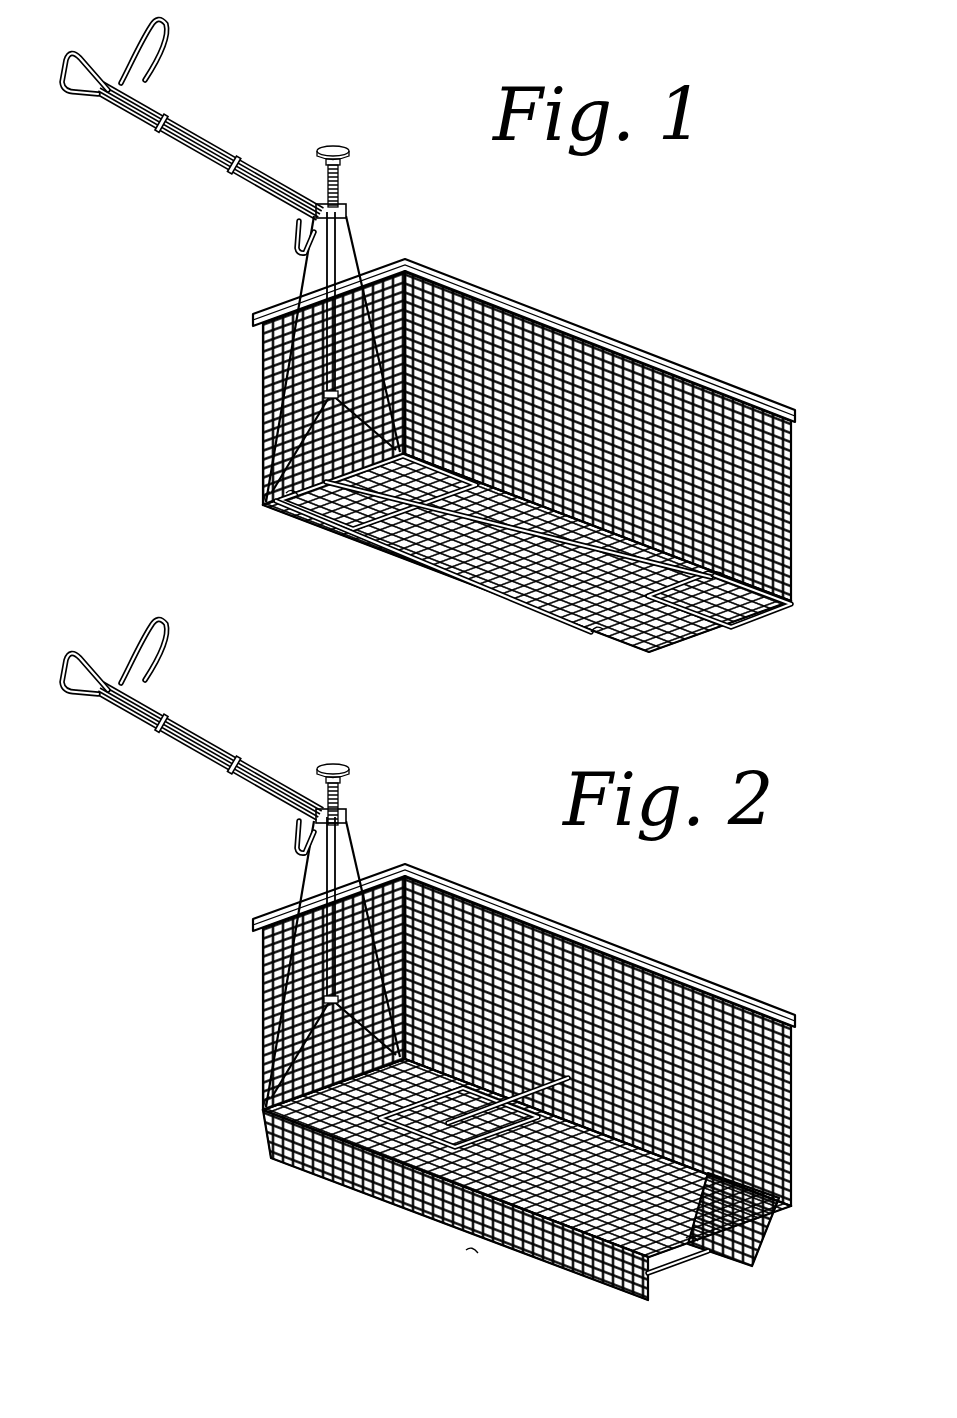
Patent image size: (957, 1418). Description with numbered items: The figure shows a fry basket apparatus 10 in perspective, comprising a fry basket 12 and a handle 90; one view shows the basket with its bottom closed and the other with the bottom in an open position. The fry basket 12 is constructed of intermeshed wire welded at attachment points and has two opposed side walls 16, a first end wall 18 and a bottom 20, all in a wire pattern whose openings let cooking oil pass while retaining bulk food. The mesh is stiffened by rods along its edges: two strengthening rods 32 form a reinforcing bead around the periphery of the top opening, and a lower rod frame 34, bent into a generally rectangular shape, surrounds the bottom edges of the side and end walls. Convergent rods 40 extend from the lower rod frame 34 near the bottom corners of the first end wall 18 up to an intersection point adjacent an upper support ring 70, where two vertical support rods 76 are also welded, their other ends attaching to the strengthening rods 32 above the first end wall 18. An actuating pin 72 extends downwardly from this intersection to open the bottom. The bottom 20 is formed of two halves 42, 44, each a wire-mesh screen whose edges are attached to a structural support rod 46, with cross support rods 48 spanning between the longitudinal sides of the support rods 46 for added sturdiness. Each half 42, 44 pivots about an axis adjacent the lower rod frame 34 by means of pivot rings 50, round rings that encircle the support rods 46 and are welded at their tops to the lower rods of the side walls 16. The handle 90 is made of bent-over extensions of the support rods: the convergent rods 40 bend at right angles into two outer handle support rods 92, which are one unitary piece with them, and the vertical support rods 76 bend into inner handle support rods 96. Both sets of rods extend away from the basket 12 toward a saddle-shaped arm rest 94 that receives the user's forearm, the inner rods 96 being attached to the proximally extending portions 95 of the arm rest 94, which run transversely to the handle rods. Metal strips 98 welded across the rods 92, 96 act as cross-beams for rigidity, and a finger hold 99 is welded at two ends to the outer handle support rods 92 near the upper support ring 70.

In FIG. 1, the fry basket apparatus 10 is at (505, 467).
In FIG. 2, the fry basket apparatus 10 is at (505, 1071).
In FIG. 1, the fry basket 12 is at (782, 456).
In FIG. 2, the fry basket 12 is at (626, 1041).
In FIG. 1, the side walls 16 is at (690, 372).
In FIG. 2, the side walls 16 is at (524, 945).
In FIG. 1, the first end wall 18 is at (252, 346).
In FIG. 2, the first end wall 18 is at (291, 993).
In FIG. 1, the bottom 20 is at (398, 555).
In FIG. 2, the bottom 20 is at (527, 1158).
In FIG. 1, the strengthening rods 32 is at (473, 284).
In FIG. 2, the strengthening rods 32 is at (478, 941).
In FIG. 1, the lower rod frame 34 is at (262, 490).
In FIG. 2, the lower rod frame 34 is at (365, 1107).
In FIG. 1, the convergent rods 40 is at (335, 341).
In FIG. 2, the convergent rods 40 is at (336, 943).
In FIG. 2, the bottom half 42 is at (455, 1205).
In FIG. 2, the bottom half 44 is at (768, 1222).
In FIG. 1, the structural support rod 46 is at (262, 495).
In FIG. 2, the structural support rod 46 is at (234, 1154).
In FIG. 1, the cross support rods 48 is at (300, 512).
In FIG. 2, the cross support rods 48 is at (582, 1277).
In FIG. 1, the pivot rings 50 is at (582, 622).
In FIG. 2, the pivot rings 50 is at (708, 1068).
In FIG. 1, the upper support ring 70 is at (380, 176).
In FIG. 2, the upper support ring 70 is at (380, 776).
In FIG. 1, the actuating pin 72 is at (332, 228).
In FIG. 2, the actuating pin 72 is at (385, 792).
In FIG. 1, the vertical support rods 76 is at (318, 250).
In FIG. 2, the vertical support rods 76 is at (317, 891).
In FIG. 1, the handle 90 is at (179, 136).
In FIG. 2, the handle 90 is at (181, 715).
In FIG. 1, the outer handle support rods 92 is at (210, 151).
In FIG. 2, the outer handle support rods 92 is at (212, 751).
In FIG. 2, the arm rest 94 is at (103, 619).
In FIG. 1, the proximally extending portions 95 is at (70, 82).
In FIG. 2, the proximally extending portions 95 is at (71, 709).
In FIG. 1, the inner handle support rods 96 is at (203, 130).
In FIG. 2, the inner handle support rods 96 is at (178, 676).
In FIG. 1, the metal strips 98 is at (226, 152).
In FIG. 2, the metal strips 98 is at (154, 770).
In FIG. 1, the finger hold 99 is at (285, 228).
In FIG. 2, the finger hold 99 is at (267, 833).